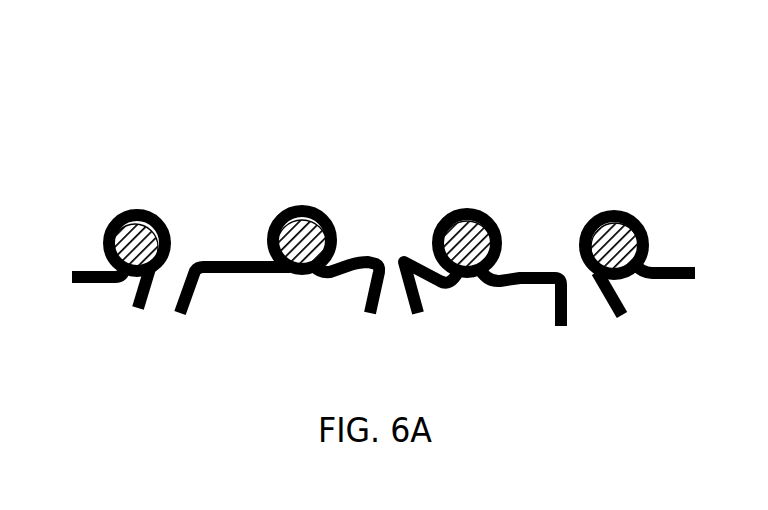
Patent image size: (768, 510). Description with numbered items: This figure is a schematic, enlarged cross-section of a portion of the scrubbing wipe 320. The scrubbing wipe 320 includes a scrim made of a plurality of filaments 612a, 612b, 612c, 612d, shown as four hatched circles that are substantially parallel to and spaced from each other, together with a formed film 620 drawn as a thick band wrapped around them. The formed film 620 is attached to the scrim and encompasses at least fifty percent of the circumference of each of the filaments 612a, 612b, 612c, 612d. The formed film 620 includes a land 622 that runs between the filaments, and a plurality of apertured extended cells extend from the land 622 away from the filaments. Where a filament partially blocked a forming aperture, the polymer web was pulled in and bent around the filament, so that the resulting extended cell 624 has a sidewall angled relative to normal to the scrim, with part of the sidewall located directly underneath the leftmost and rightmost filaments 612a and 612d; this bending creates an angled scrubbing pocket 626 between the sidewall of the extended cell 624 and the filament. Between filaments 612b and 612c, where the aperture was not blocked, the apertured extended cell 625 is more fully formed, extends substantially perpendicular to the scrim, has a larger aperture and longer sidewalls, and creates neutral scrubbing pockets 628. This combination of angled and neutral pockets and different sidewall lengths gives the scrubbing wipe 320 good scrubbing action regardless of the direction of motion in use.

The scrubbing wipe 320 is at (121, 103).
The formed film 620 is at (135, 214).
The filament 612a is at (119, 222).
The filament 612b is at (282, 217).
The filament 612c is at (446, 218).
The filament 612d is at (593, 216).
The land 622 is at (242, 262).
The apertured extended cell 624 is at (158, 306).
The apertured extended cell 625 is at (394, 311).
The angled scrubbing pocket 626 is at (128, 291).
The neutral scrubbing pocket 628 is at (354, 289).